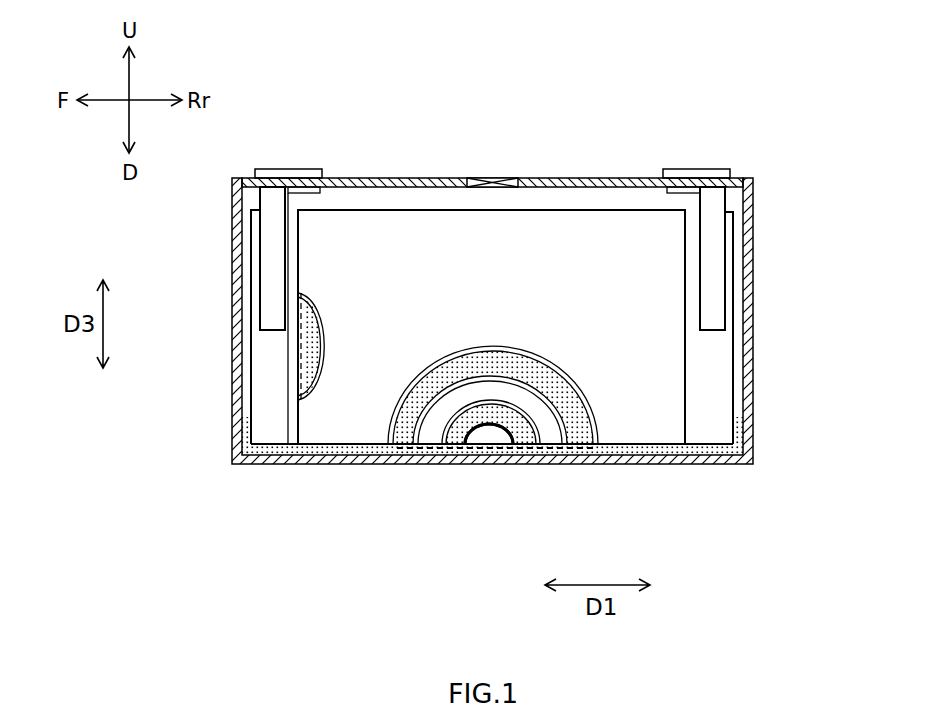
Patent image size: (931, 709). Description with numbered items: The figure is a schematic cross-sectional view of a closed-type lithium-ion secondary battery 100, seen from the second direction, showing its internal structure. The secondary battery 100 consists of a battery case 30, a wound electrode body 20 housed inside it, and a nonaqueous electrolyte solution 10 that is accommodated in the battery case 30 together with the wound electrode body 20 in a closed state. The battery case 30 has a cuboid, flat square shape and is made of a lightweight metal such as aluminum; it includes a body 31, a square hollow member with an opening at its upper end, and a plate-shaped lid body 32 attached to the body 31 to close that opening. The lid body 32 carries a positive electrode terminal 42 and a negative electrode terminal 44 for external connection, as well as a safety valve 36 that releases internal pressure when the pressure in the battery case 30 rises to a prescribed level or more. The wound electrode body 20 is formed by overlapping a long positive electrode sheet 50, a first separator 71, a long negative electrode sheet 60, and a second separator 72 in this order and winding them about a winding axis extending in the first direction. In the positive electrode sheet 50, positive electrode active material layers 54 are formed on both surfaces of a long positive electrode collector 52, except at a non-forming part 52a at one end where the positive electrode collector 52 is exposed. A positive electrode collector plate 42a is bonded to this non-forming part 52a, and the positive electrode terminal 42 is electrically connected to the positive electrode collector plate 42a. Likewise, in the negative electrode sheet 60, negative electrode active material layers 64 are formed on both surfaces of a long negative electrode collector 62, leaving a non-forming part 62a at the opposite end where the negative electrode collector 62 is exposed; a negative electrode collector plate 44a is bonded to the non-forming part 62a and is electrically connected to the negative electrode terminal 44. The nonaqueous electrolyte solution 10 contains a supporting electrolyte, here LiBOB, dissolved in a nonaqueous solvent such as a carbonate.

The secondary battery 100 is at (770, 106).
The nonaqueous electrolyte solution 10 is at (656, 452).
The wound electrode body 20 is at (415, 210).
The battery case 30 is at (754, 285).
The body 31 is at (753, 318).
The lid body 32 is at (603, 177).
The safety valve 36 is at (502, 177).
The positive electrode terminal 42 is at (298, 168).
The positive electrode collector plate 42a is at (268, 248).
The negative electrode terminal 44 is at (707, 168).
The negative electrode collector plate 44a is at (722, 244).
The positive electrode sheet 50 is at (399, 438).
The positive electrode collector 52 is at (250, 352).
The non-forming part 52a is at (262, 394).
The positive electrode active material layer 54 is at (327, 325).
The negative electrode sheet 60 is at (459, 432).
The negative electrode collector 62 is at (733, 357).
The non-forming part 62a is at (722, 393).
The negative electrode active material layer 64 is at (490, 479).
The first separator 71 is at (323, 400).
The second separator 72 is at (433, 440).